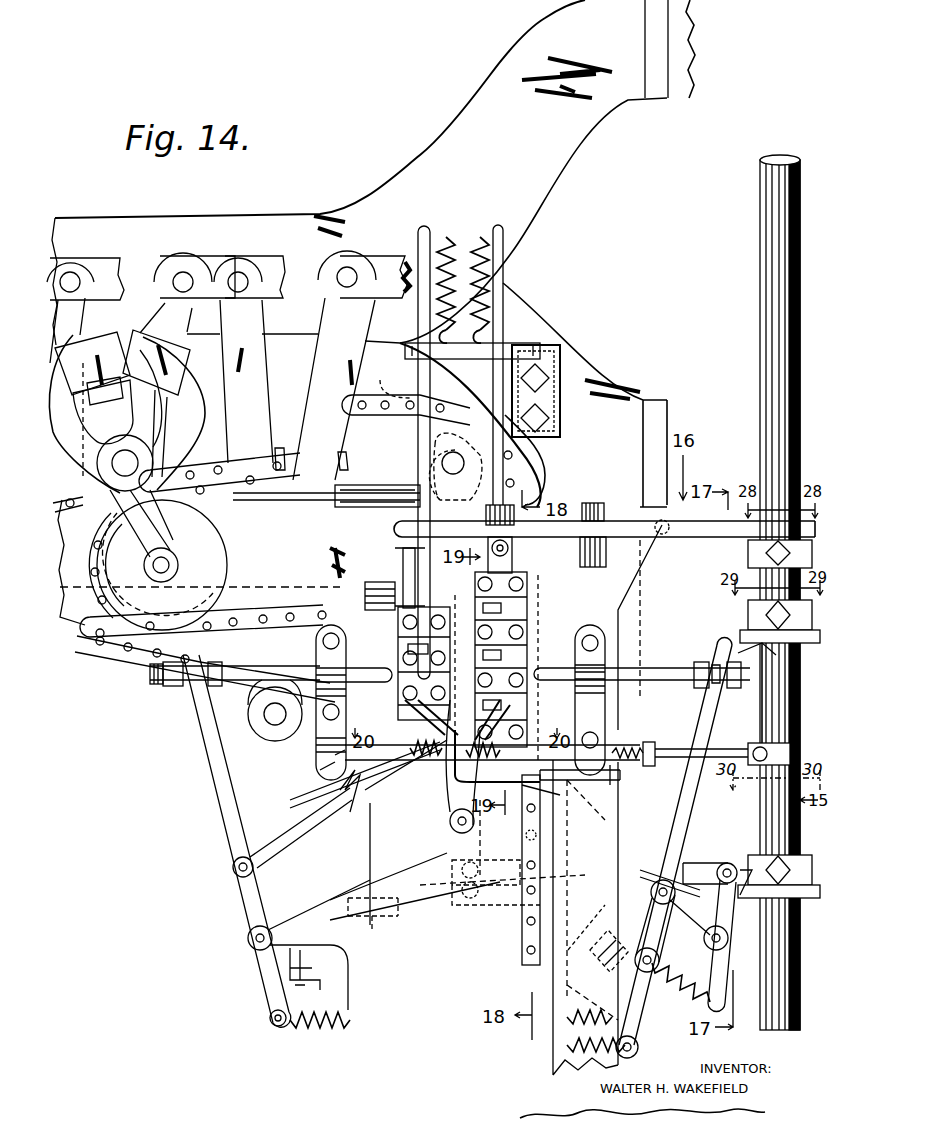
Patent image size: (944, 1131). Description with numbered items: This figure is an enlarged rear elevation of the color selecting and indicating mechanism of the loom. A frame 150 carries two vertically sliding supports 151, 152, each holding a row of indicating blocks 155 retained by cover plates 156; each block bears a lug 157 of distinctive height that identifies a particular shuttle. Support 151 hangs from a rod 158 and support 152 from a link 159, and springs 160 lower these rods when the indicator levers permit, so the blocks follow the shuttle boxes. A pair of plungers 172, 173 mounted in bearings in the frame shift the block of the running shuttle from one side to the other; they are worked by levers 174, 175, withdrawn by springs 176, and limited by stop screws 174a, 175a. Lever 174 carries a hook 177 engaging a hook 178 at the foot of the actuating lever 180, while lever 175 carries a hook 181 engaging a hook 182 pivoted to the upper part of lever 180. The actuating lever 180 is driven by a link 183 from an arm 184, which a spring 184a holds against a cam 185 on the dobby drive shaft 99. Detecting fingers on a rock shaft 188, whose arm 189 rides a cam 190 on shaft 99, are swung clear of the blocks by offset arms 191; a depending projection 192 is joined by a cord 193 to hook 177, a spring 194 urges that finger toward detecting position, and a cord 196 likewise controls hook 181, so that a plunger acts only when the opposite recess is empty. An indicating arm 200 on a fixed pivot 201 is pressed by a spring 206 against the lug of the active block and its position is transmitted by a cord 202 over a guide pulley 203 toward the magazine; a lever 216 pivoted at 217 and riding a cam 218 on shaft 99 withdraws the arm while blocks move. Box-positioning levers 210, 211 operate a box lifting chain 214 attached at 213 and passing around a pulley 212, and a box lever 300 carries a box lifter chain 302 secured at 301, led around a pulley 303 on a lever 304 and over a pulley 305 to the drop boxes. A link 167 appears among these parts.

The dobby drive shaft 99 is at (762, 333).
The frame 150 is at (642, 605).
The support 151 is at (514, 563).
The support 152 is at (403, 583).
The indicating block 155 is at (527, 637).
The cover plate 156 is at (545, 560).
The lug 157 is at (502, 597).
The rod 158 is at (512, 266).
The link 159 is at (418, 318).
The spring 160 is at (482, 240).
The link 167 is at (465, 683).
The plunger 172 is at (648, 685).
The plunger 173 is at (400, 688).
The lever 174 is at (690, 815).
The stop screw 174a is at (600, 951).
The lever 175 is at (220, 800).
The stop screw 175a is at (300, 975).
The spring 176 is at (318, 1024).
The hook 177 is at (628, 888).
The hook 178 is at (503, 905).
The actuating lever 180 is at (452, 814).
The hook 181 is at (292, 820).
The hook 182 is at (352, 815).
The link 183 is at (697, 870).
The arm 184 is at (725, 930).
The spring 184a is at (681, 984).
The cam 185 is at (758, 855).
The rock shaft 188 is at (660, 755).
The arm 189 is at (776, 718).
The cam 190 is at (752, 607).
The offset arm 191 is at (405, 742).
The offset projection 192 is at (492, 741).
The cord 193 is at (545, 800).
The spring 194 is at (400, 770).
The cord 196 is at (340, 766).
The indicating arm 200 is at (406, 643).
The fixed pivot 201 is at (461, 670).
The cord 202 is at (258, 500).
The guide pulley 203 is at (356, 508).
The spring 206 is at (405, 500).
The box-positioning lever 210 is at (247, 265).
The box-positioning lever 211 is at (190, 263).
The pulley 212 is at (78, 615).
The attachment point 213 is at (281, 447).
The box lifting chain 214 is at (387, 412).
The lever 216 is at (620, 520).
The pivot 217 is at (596, 495).
The cam 218 is at (752, 564).
The box lever 300 is at (320, 367).
The attachment point 301 is at (338, 466).
The box lifter chain 302 is at (198, 512).
The pulley 303 is at (145, 595).
The lever 304 is at (125, 296).
The pulley 305 is at (372, 600).